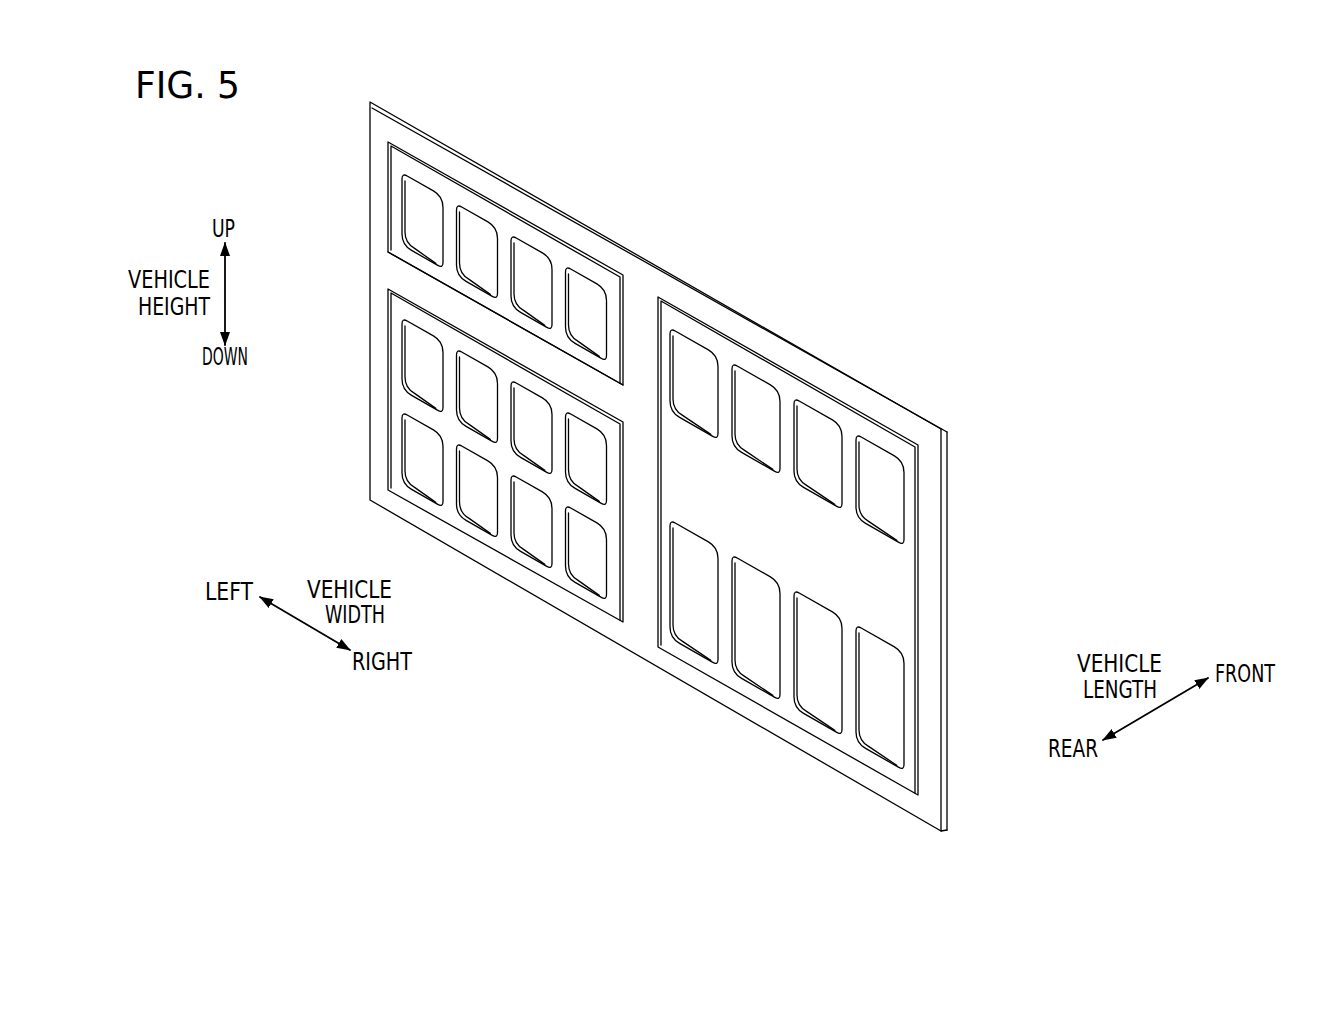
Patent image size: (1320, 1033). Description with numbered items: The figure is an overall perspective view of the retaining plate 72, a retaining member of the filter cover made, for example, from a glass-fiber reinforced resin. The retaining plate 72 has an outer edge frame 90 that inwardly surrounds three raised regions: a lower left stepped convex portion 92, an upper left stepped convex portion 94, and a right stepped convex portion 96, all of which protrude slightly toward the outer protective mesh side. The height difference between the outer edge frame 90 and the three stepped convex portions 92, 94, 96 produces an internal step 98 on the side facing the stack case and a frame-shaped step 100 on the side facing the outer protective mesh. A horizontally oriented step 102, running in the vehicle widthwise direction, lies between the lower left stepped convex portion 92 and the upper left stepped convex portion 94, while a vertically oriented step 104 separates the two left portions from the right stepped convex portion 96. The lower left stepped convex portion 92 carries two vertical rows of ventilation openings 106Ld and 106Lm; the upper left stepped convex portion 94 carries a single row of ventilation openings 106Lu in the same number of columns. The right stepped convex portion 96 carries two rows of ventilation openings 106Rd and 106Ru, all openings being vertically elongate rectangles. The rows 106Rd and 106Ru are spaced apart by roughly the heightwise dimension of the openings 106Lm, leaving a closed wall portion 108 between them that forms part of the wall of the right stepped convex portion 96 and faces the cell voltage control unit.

The retaining plate 72 is at (880, 127).
The outer edge frame 90 is at (930, 698).
The lower left stepped convex portion 92 is at (395, 455).
The upper left stepped convex portion 94 is at (394, 194).
The right stepped convex portion 96 is at (885, 585).
The internal step 98 is at (948, 472).
The frame-shaped step 100 is at (933, 772).
The horizontally oriented step 102 is at (417, 284).
The vertically oriented step 104 is at (643, 621).
The ventilation openings 106Lu is at (534, 247).
The ventilation openings 106Lm is at (457, 388).
The ventilation openings 106Ld is at (540, 558).
The ventilation openings 106Ru is at (888, 455).
The ventilation openings 106Rd is at (818, 713).
The closed wall portion 108 is at (772, 533).